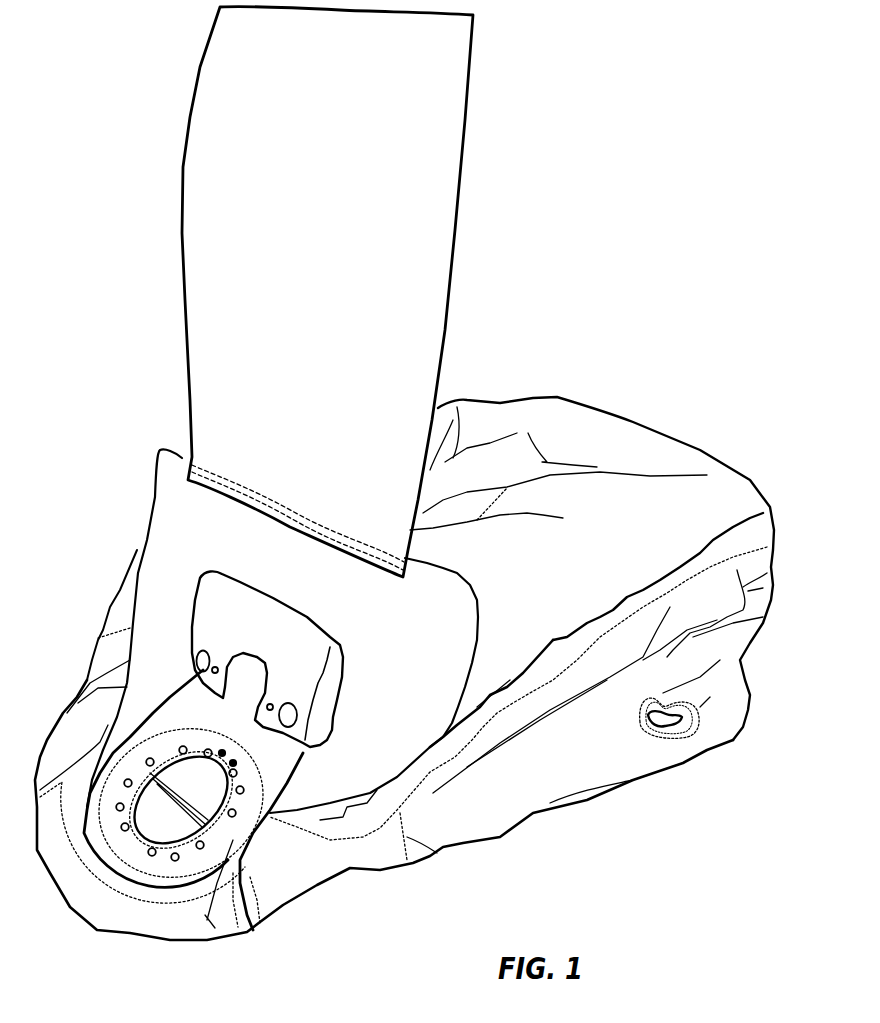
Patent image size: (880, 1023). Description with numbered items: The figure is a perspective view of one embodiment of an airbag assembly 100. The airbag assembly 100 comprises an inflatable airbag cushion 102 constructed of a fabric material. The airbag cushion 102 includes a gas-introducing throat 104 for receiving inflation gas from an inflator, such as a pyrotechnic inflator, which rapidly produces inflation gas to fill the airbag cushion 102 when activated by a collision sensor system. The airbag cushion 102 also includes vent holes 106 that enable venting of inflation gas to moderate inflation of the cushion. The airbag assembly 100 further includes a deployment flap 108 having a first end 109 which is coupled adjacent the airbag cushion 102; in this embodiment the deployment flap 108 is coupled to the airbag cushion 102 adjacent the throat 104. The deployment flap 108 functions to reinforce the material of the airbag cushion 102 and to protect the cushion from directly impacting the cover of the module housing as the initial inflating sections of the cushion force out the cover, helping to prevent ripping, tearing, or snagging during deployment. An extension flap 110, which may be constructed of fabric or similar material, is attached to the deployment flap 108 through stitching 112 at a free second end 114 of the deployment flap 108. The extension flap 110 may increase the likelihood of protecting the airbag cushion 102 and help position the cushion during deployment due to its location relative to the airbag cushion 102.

The airbag assembly 100 is at (655, 357).
The inflatable airbag cushion 102 is at (523, 828).
The gas-introducing throat 104 is at (155, 820).
The vent holes 106 is at (680, 735).
The deployment flap 108 is at (173, 508).
The first end 109 is at (140, 705).
The extension flap 110 is at (410, 257).
The stitching 112 is at (217, 475).
The free second end 114 is at (445, 585).